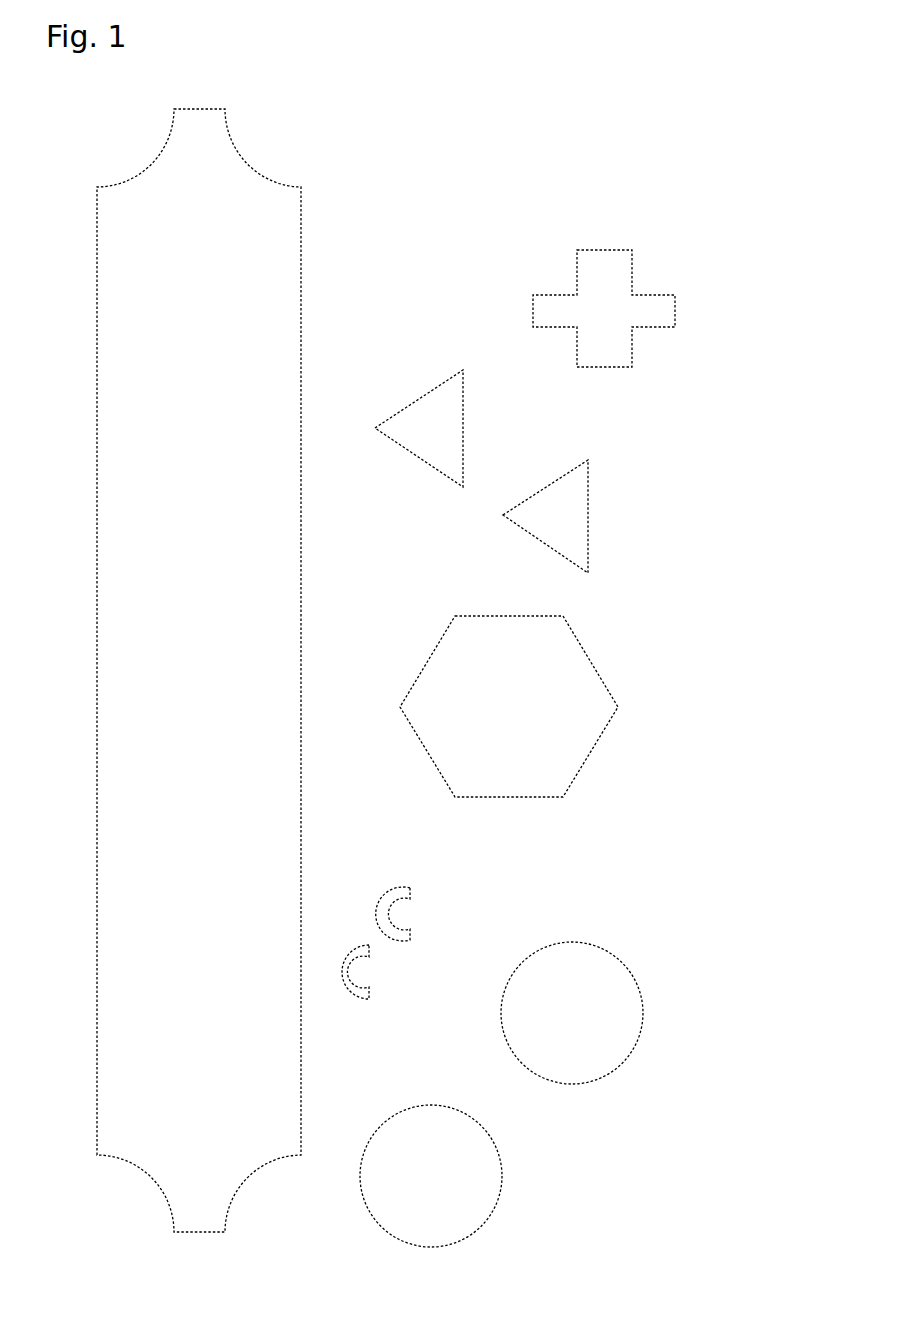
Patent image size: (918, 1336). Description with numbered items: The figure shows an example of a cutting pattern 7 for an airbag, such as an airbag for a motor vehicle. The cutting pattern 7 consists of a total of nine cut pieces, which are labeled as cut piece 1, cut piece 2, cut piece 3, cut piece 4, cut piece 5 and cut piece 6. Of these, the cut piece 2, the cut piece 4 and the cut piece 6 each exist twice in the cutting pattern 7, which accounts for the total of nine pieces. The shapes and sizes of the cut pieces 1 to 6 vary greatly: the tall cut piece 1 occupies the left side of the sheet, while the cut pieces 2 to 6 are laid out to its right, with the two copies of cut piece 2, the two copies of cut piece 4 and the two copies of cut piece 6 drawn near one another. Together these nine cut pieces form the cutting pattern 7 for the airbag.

The cut piece 1 is at (292, 232).
The cut piece 2 is at (637, 1042).
The cut piece 3 is at (572, 775).
The cut piece 4 is at (463, 440).
The cut piece 5 is at (655, 300).
The cut piece 6 is at (408, 892).
The cutting pattern 7 is at (743, 93).